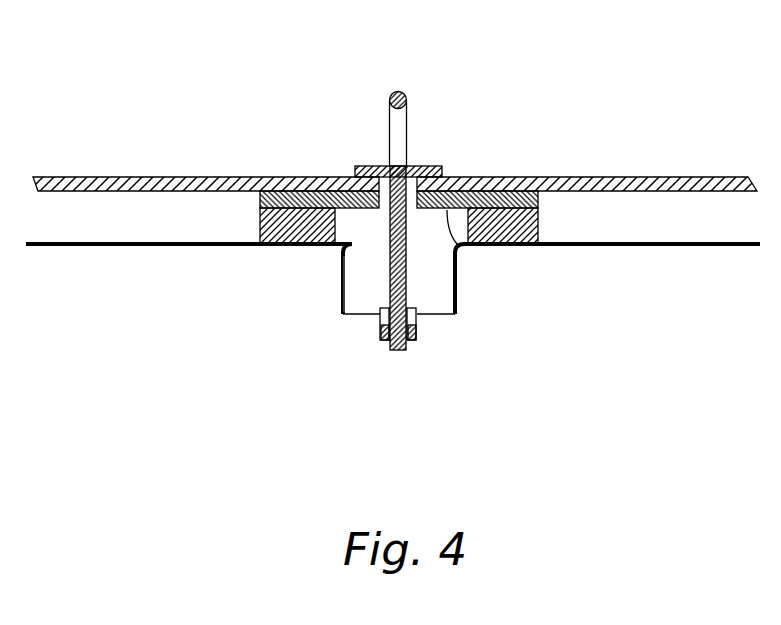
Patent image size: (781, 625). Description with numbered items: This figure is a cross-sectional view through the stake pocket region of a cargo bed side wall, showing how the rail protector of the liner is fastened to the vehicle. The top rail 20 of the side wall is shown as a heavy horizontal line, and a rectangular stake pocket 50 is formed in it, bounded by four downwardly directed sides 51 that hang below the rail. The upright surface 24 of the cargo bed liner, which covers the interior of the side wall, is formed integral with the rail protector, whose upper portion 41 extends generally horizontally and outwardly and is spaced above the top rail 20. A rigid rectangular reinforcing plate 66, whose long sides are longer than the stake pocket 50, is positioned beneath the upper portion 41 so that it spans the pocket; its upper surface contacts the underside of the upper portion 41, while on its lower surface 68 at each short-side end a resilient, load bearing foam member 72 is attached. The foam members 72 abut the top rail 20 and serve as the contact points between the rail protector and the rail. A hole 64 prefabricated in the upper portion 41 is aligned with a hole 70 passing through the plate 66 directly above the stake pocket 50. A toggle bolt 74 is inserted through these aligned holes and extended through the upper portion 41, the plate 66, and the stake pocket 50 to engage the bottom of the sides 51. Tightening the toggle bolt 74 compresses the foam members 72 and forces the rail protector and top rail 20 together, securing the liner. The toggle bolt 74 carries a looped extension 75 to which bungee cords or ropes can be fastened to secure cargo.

The top rail 20 is at (90, 246).
The upright surface 24 is at (127, 213).
The upper portion 41 is at (605, 177).
The stake pocket 50 is at (470, 328).
The sides 51 is at (335, 285).
The hole 64 is at (463, 178).
The reinforcing plate 66 is at (272, 183).
The lower surface 68 is at (460, 247).
The hole 70 is at (505, 190).
The foam member 72 is at (260, 227).
The toggle bolt 74 is at (352, 358).
The looped extension 75 is at (400, 92).